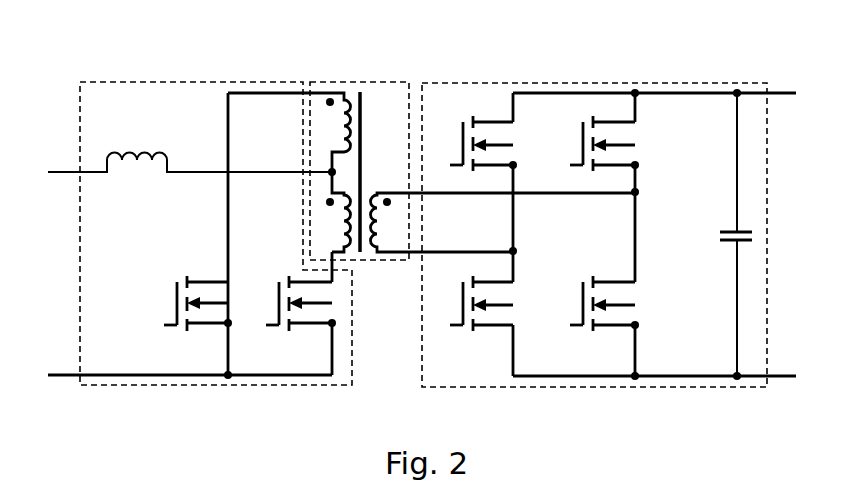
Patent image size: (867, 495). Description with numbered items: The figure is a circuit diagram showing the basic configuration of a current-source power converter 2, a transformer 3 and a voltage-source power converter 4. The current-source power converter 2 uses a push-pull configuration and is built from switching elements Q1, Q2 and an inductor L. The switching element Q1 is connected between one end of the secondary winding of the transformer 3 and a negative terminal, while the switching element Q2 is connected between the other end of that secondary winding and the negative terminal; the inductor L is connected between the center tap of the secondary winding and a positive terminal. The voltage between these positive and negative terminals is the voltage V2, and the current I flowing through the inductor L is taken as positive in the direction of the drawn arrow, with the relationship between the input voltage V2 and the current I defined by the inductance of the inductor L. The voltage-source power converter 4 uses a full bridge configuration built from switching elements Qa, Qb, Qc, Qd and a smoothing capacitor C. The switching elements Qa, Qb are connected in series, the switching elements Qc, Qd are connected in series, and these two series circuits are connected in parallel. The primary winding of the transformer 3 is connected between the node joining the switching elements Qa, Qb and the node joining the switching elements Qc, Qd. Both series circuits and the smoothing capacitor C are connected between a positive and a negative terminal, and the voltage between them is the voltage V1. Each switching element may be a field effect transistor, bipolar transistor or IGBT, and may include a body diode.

The current-source power converter 2 is at (133, 79).
The transformer 3 is at (364, 80).
The voltage-source power converter 4 is at (699, 81).
The inductor L is at (145, 151).
The current I is at (120, 192).
The voltage V2 is at (47, 246).
The voltage V1 is at (798, 192).
The switching element Q1 is at (177, 297).
The switching element Q2 is at (279, 297).
The switching element Qa is at (463, 137).
The switching element Qb is at (463, 297).
The switching element Qc is at (583, 137).
The switching element Qd is at (583, 297).
The smoothing capacitor C is at (733, 230).